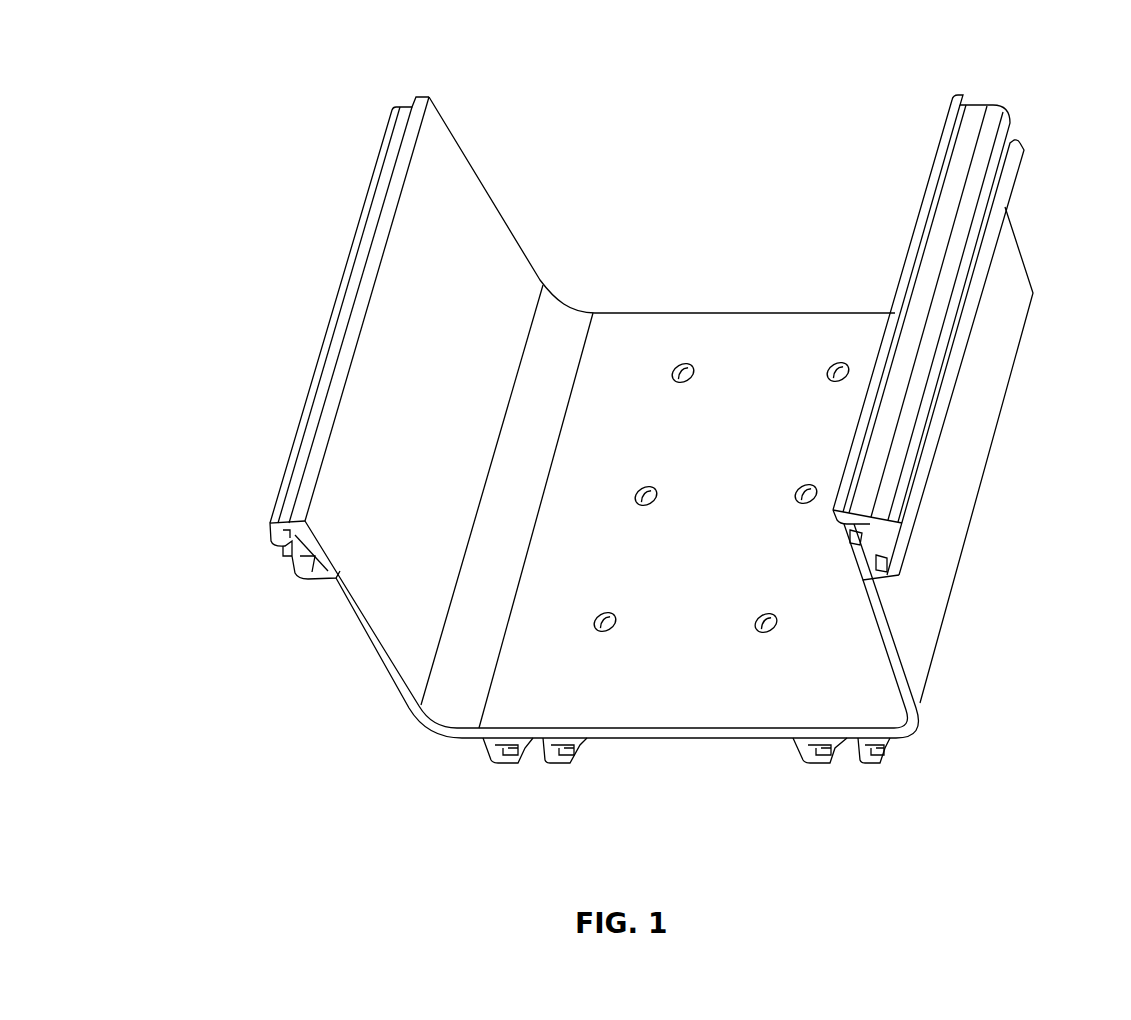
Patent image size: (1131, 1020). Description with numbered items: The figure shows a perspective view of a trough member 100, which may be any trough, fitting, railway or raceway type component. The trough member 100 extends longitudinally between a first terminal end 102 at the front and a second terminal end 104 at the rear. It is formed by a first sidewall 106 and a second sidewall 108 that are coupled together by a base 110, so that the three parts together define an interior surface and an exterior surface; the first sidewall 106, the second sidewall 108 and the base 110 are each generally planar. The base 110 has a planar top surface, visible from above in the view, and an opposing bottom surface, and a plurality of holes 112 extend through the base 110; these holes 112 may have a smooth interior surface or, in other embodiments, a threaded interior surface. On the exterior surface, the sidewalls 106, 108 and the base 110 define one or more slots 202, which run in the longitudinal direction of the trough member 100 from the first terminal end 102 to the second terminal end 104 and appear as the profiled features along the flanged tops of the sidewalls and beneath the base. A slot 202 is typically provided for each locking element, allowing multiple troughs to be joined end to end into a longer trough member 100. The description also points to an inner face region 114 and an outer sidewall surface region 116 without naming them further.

The trough member 100 is at (388, 52).
The first terminal end 102 is at (677, 750).
The second terminal end 104 is at (815, 303).
The first sidewall 106 is at (1003, 358).
The second sidewall 108 is at (383, 437).
The base 110 is at (664, 463).
The holes 112 is at (592, 626).
The inner face of base 114 is at (734, 380).
The outer surface of sidewall 116 is at (964, 596).
The slots 202 is at (903, 515).